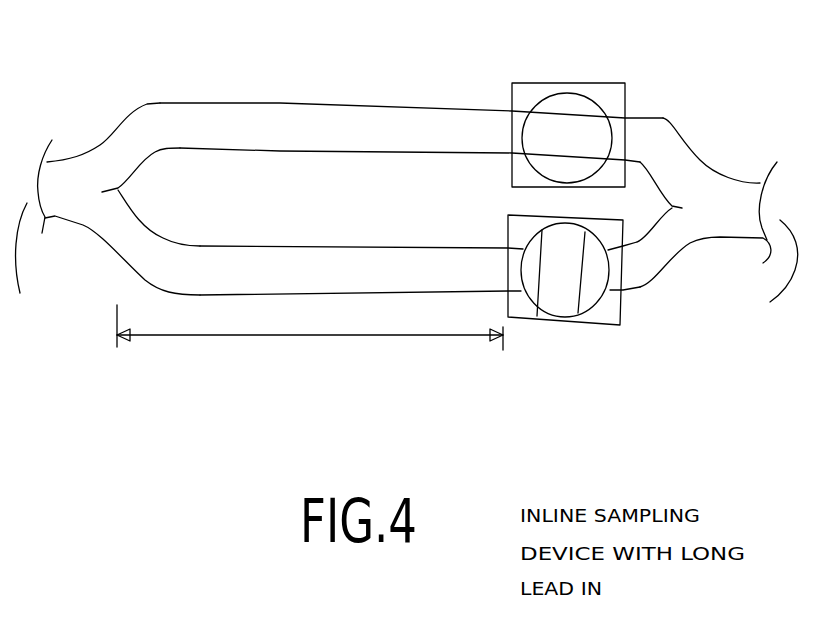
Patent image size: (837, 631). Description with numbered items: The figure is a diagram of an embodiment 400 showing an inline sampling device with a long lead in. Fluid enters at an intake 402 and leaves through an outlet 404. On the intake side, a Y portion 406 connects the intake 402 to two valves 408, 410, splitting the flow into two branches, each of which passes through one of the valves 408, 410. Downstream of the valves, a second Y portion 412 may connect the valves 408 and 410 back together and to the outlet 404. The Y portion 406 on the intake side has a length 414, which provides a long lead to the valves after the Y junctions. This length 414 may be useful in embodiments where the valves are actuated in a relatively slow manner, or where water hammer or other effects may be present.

The embodiment 400 is at (416, 261).
The intake 402 is at (55, 247).
The outlet 404 is at (779, 269).
The Y portion 406 is at (142, 102).
The valve 408 is at (607, 328).
The valve 410 is at (530, 80).
The second Y portion 412 is at (660, 122).
The length 414 is at (310, 364).